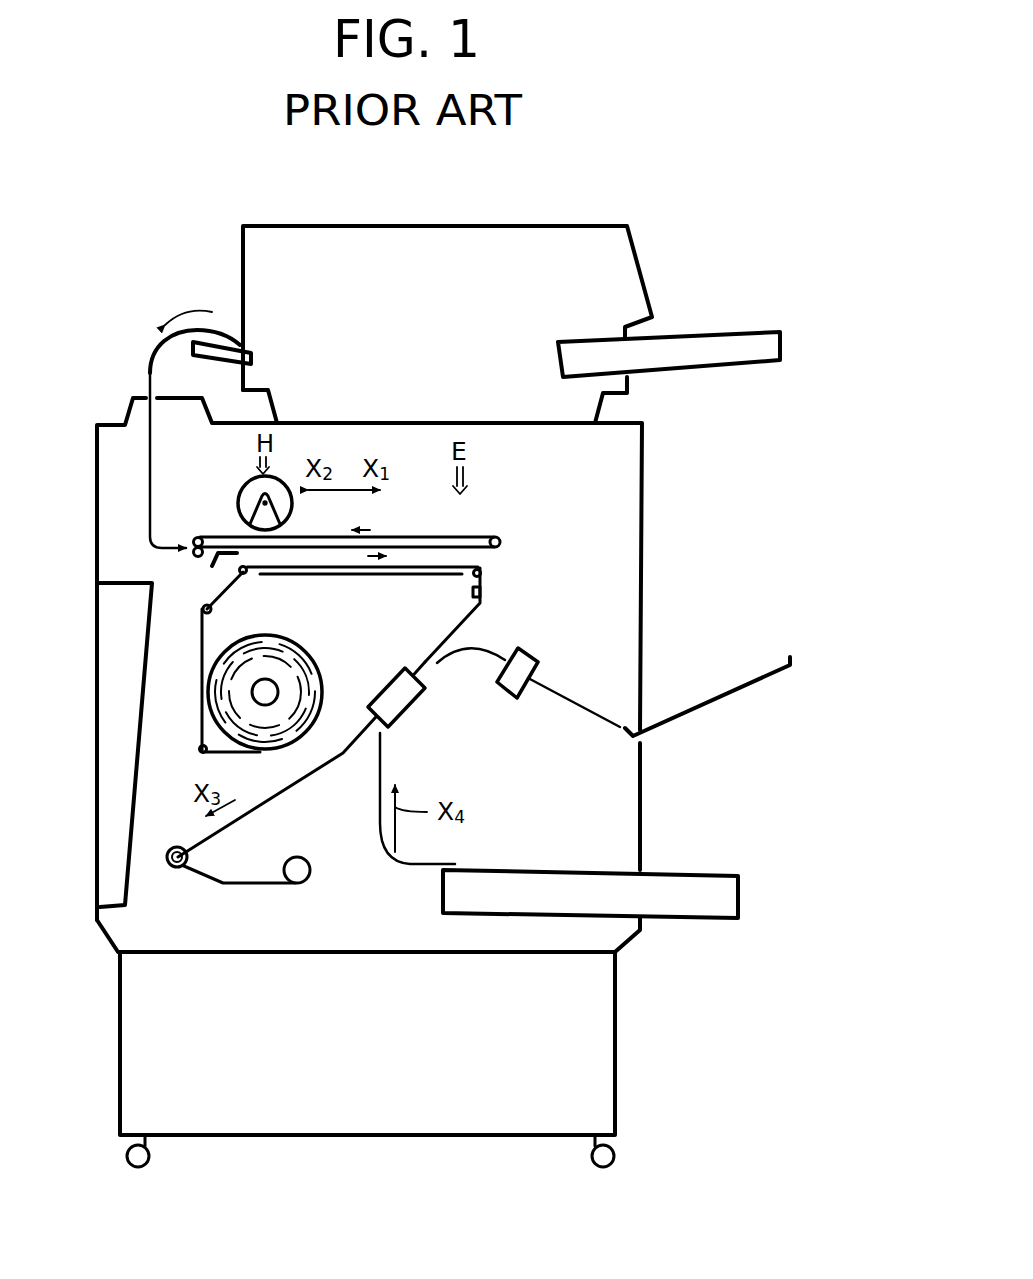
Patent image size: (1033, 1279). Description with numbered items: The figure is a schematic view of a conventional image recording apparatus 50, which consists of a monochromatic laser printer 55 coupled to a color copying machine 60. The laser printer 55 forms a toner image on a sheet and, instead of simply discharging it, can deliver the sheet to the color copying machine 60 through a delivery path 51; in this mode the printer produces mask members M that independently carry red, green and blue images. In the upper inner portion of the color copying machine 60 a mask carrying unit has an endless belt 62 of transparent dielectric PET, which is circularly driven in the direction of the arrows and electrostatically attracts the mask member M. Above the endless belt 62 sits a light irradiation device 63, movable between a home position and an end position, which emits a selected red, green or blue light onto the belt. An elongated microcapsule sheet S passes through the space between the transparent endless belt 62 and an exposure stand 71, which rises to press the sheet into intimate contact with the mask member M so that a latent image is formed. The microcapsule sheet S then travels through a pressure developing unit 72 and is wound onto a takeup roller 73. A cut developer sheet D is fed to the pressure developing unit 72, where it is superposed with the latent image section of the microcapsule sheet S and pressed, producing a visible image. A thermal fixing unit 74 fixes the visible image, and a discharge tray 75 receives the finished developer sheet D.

The image recording apparatus 50 is at (203, 252).
The delivery path 51 is at (228, 337).
The monochromatic laser printer 55 is at (644, 238).
The color copying machine 60 is at (652, 435).
The endless belt 62 is at (470, 537).
The light irradiation device 63 is at (238, 502).
The exposure stand 71 is at (290, 573).
The pressure developing unit 72 is at (412, 700).
The takeup roller 73 is at (300, 873).
The thermal fixing unit 74 is at (527, 663).
The discharge tray 75 is at (723, 697).
The mask member M is at (148, 373).
The microcapsule sheet S is at (202, 678).
The developer sheet D is at (687, 897).